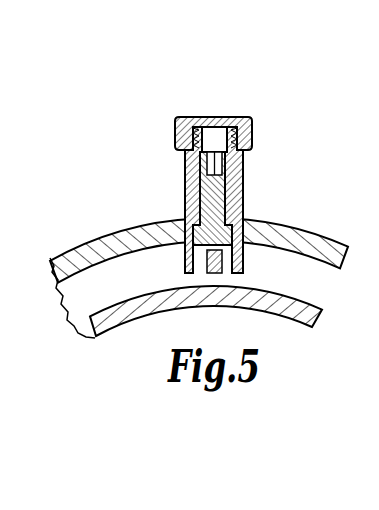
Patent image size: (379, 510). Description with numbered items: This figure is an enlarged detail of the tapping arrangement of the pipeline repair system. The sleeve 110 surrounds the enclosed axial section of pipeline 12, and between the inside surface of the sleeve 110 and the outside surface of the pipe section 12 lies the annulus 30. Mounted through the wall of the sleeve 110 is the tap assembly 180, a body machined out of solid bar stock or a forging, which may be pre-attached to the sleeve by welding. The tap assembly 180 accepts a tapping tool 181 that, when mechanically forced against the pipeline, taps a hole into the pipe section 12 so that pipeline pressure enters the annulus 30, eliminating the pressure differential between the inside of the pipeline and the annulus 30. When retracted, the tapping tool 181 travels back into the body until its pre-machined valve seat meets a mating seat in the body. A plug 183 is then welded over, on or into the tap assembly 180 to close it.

The axial section of pipeline 12 is at (270, 314).
The annulus 30 is at (151, 283).
The sleeve 110 is at (308, 237).
The tap assembly 180 is at (185, 180).
The tapping tool 181 is at (240, 191).
The plug 183 is at (213, 116).